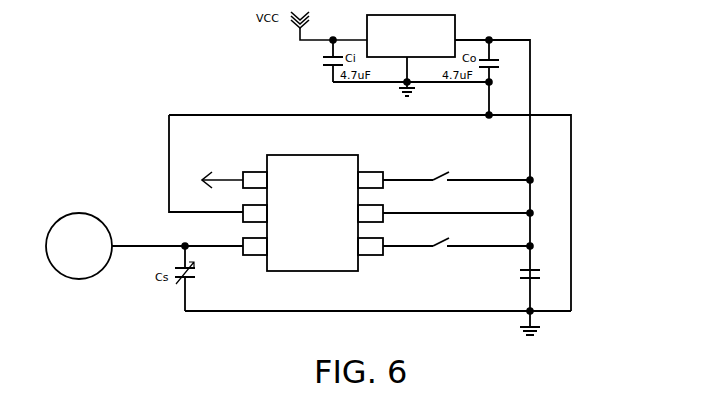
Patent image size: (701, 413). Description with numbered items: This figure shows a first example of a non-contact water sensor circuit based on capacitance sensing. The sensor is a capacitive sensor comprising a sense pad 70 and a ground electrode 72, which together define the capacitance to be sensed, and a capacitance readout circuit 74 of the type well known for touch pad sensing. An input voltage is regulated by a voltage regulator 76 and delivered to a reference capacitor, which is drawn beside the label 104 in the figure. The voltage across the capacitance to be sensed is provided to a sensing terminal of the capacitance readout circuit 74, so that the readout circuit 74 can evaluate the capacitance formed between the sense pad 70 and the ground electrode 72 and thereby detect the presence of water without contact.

The sense pad 70 is at (76, 213).
The ground electrode 72 is at (540, 321).
The capacitance readout circuit 74 is at (293, 155).
The voltage regulator 76 is at (448, 15).
The capacitor C1 104 is at (540, 274).